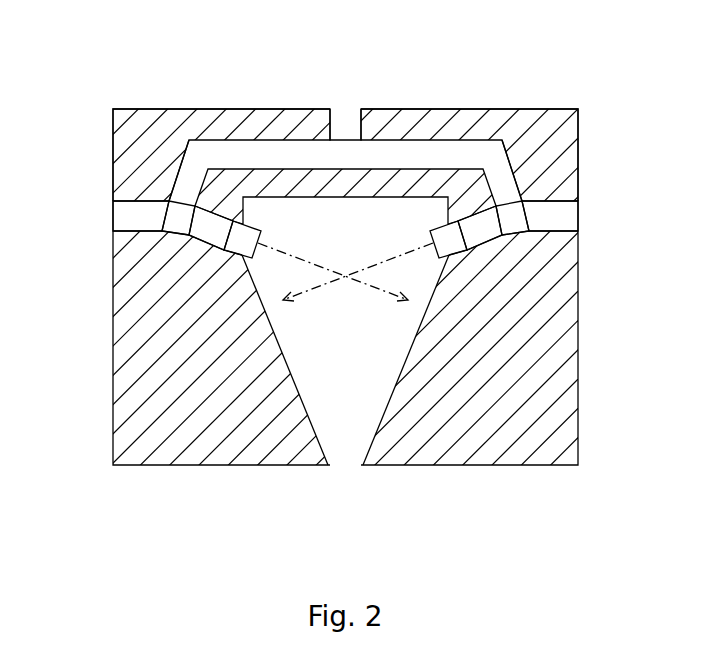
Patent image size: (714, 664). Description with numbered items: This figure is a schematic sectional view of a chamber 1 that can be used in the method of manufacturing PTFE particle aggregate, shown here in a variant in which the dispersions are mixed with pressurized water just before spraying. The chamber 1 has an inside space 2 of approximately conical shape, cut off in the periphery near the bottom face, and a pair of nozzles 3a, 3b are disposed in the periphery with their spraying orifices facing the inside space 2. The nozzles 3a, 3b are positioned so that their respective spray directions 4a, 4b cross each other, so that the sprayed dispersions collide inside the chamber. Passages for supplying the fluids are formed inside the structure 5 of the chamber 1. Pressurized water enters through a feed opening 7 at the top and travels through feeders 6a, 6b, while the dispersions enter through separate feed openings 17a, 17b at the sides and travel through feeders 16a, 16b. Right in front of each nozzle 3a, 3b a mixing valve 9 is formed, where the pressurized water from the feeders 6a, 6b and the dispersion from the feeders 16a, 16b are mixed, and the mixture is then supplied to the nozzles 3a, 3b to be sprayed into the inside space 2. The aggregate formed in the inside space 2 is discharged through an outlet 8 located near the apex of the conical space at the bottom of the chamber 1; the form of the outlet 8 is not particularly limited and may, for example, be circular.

The chamber 1 is at (598, 92).
The inside space 2 is at (360, 418).
The nozzle 3a is at (455, 245).
The nozzle 3b is at (237, 243).
The spray direction 4a is at (390, 260).
The spray direction 4b is at (287, 255).
The structure 5 is at (118, 378).
The feeder 6a is at (457, 145).
The feeder 6b is at (240, 145).
The feed opening 7 is at (348, 108).
The outlet 8 is at (346, 469).
The mixing valve 9 is at (183, 220).
The feeder 16a is at (562, 216).
The feeder 16b is at (134, 214).
The feed opening 17a is at (588, 212).
The feed opening 17b is at (103, 212).